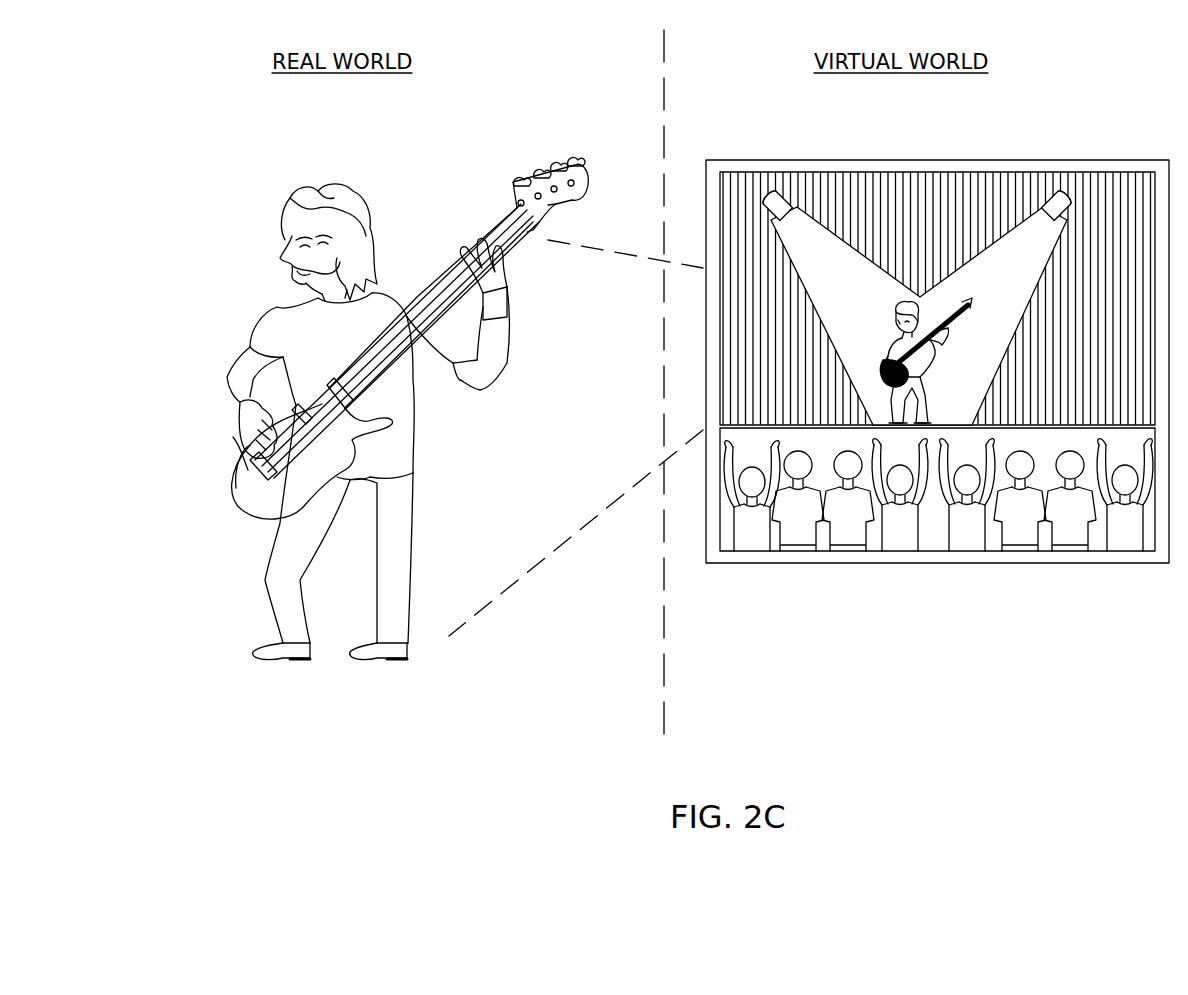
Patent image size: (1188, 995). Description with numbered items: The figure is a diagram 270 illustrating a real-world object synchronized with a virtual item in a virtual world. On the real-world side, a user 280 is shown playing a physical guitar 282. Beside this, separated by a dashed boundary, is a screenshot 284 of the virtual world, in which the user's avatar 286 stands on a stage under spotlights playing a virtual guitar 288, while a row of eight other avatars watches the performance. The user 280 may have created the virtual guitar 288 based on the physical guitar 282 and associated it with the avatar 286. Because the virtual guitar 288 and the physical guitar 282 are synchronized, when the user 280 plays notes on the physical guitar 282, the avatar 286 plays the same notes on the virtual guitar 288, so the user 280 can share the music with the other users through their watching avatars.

The diagram 270 is at (608, 73).
The user 280 is at (350, 217).
The physical guitar 282 is at (283, 497).
The screenshot 284 is at (1008, 160).
The avatar 286 is at (893, 343).
The virtual guitar 288 is at (968, 313).